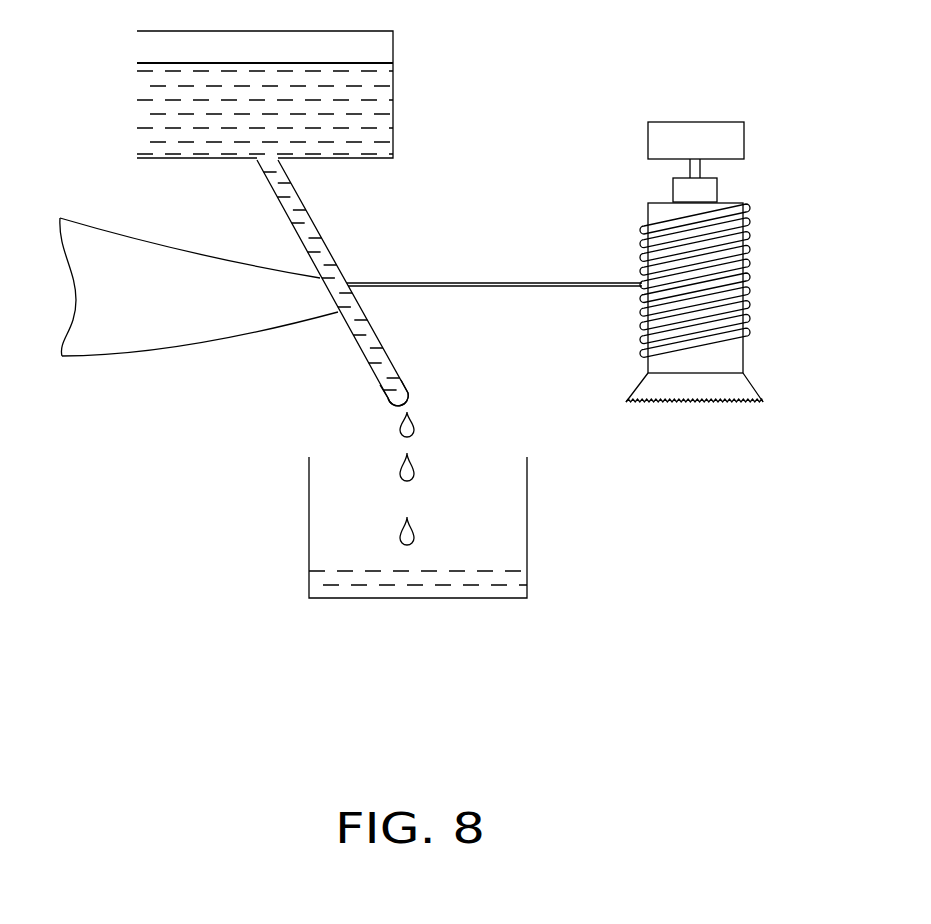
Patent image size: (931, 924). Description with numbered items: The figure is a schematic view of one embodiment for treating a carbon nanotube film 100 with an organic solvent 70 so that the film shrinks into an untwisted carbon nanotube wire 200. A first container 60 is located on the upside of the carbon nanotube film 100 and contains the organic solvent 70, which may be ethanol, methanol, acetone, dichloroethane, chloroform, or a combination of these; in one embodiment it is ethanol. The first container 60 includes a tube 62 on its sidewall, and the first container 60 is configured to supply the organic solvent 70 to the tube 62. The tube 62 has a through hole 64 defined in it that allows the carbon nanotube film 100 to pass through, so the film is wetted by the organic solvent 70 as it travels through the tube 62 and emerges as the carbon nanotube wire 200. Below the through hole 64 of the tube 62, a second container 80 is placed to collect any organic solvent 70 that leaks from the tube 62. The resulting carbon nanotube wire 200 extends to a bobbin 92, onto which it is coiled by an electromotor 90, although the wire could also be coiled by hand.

The first container 60 is at (392, 47).
The organic solvent 70 is at (157, 114).
The tube 62 is at (318, 228).
The through hole 64 is at (343, 323).
The carbon nanotube film 100 is at (158, 335).
The carbon nanotube wire 200 is at (548, 286).
The electromotor 90 is at (698, 133).
The bobbin 92 is at (660, 220).
The second container 80 is at (527, 505).